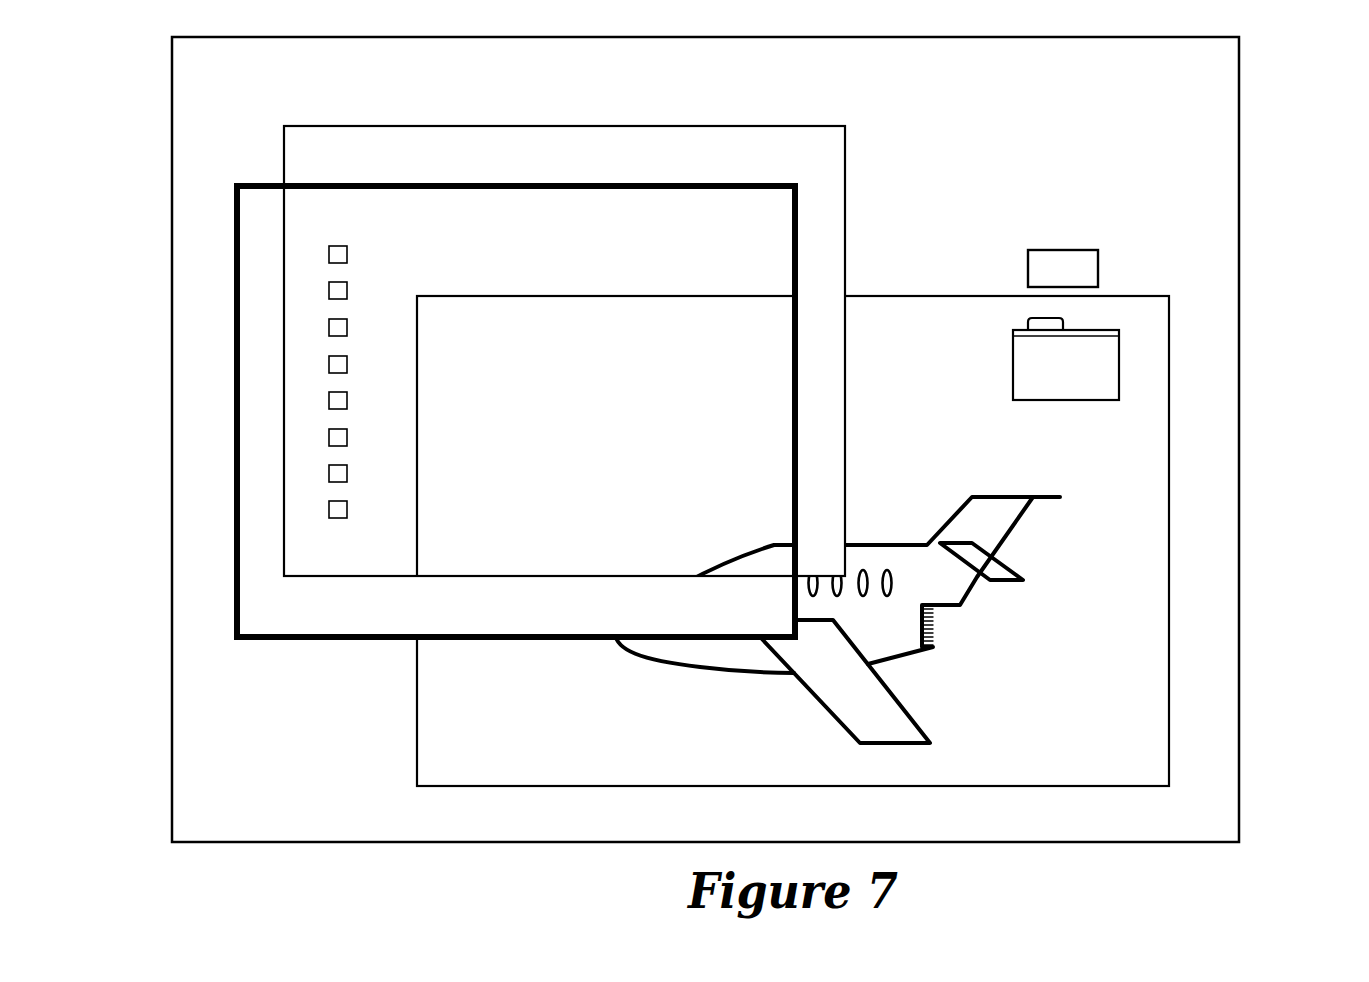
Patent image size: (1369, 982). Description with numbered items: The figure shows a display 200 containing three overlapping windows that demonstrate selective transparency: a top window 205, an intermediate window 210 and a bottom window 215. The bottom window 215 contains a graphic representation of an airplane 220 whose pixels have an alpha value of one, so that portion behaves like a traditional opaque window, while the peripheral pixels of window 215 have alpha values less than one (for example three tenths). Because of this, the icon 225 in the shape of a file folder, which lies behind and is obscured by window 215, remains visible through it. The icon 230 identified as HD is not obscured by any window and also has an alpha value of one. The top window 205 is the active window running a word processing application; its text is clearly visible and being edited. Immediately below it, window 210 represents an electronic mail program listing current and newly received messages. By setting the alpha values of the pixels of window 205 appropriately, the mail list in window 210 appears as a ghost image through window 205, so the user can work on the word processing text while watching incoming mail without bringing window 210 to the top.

The display 200 is at (1239, 724).
The top window 205 is at (328, 643).
The intermediate window 210 is at (845, 215).
The bottom window 215 is at (1169, 416).
The graphic representation of an airplane 220 is at (1010, 530).
The icon in the shape of a file folder 225 is at (1060, 400).
The icon identified as HD 230 is at (1062, 248).